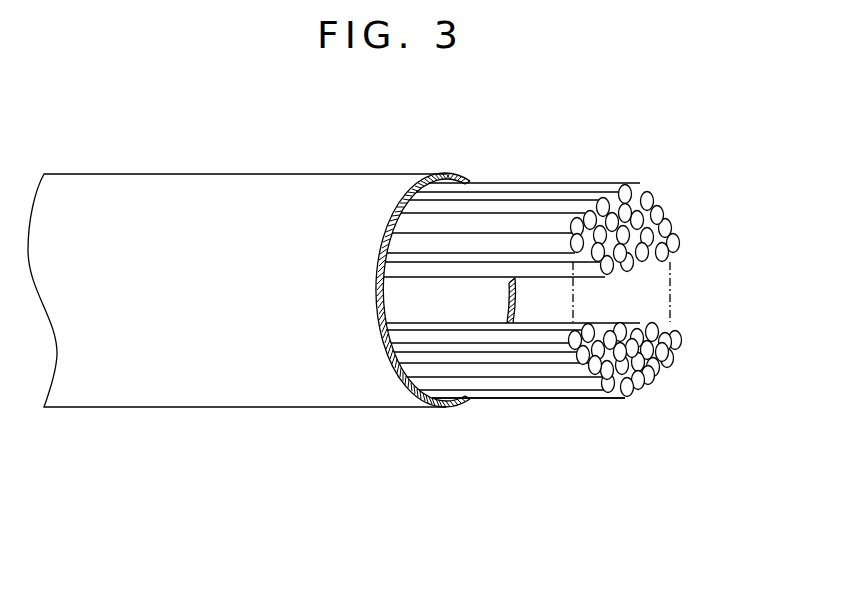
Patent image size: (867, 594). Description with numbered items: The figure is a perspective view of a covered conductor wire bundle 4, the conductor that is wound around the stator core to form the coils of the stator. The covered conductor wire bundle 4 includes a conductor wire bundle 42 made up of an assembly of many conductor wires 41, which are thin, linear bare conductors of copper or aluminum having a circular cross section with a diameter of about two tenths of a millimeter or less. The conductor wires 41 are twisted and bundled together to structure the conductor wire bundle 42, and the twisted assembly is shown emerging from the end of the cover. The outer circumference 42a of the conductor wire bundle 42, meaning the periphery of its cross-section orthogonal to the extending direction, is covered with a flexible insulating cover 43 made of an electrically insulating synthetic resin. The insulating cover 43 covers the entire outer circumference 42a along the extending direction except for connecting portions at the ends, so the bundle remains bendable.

The covered conductor wire bundle 4 is at (141, 408).
The conductor wire 41 is at (545, 185).
The conductor wire bundle 42 is at (708, 176).
The outer circumference of the conductor wire bundle 42a is at (533, 400).
The insulating cover 43 is at (452, 176).